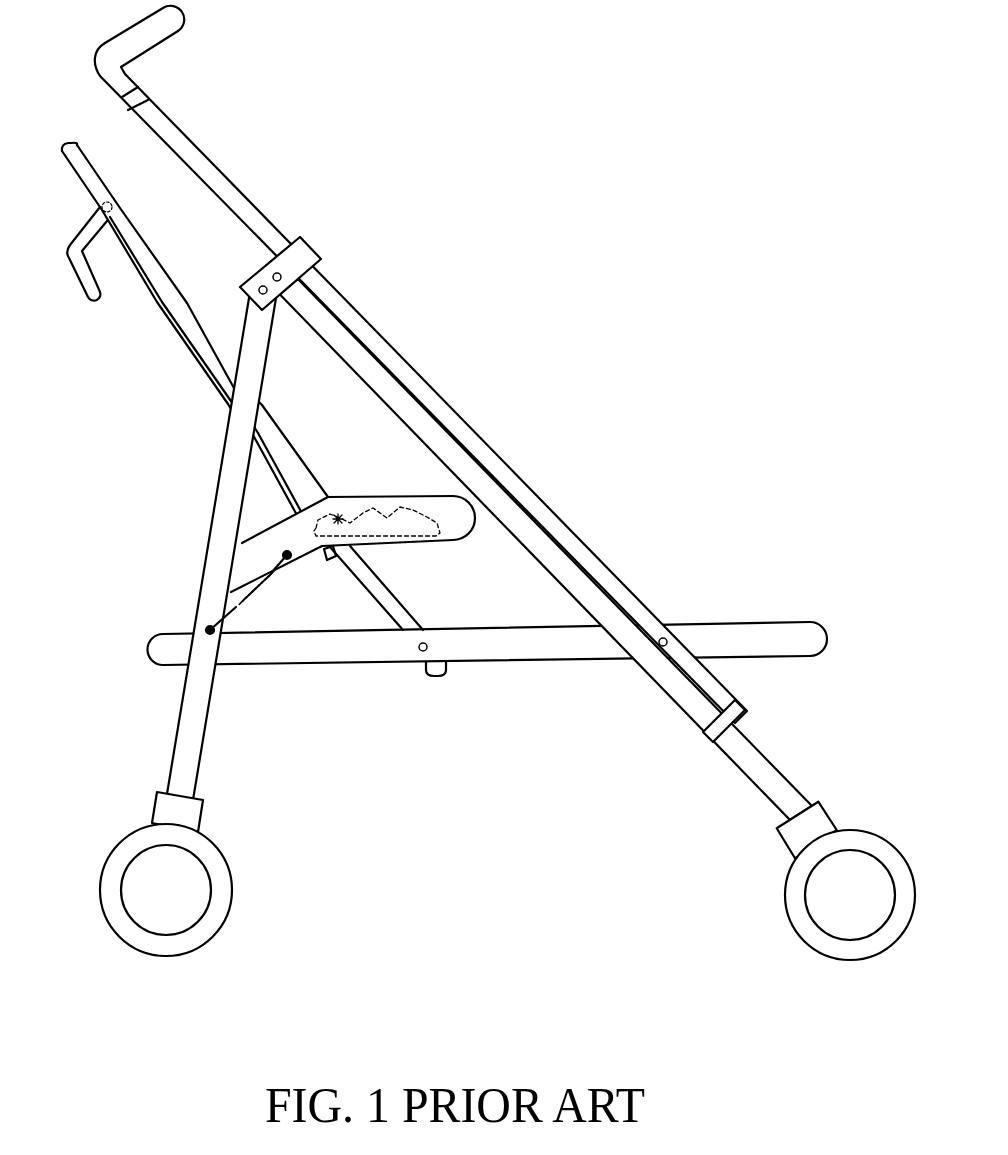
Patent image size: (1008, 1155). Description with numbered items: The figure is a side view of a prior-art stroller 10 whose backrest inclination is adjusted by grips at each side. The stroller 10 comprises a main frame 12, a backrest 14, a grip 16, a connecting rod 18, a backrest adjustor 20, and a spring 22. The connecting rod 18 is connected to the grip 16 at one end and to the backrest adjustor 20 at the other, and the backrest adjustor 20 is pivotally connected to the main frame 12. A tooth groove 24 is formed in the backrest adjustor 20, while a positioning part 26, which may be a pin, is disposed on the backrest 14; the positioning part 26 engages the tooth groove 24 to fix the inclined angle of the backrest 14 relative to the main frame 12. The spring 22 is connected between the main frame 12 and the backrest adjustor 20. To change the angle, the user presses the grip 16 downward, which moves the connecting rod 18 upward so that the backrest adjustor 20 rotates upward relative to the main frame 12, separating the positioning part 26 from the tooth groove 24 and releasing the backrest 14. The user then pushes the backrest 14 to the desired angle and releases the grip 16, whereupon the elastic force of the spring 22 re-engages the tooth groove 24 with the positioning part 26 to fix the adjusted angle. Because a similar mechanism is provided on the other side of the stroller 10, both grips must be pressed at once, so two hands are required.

The stroller 10 is at (471, 483).
The main frame 12 is at (237, 507).
The backrest 14 is at (213, 343).
The grip 16 is at (82, 240).
The connecting rod 18 is at (157, 302).
The backrest adjustor 20 is at (364, 506).
The spring 22 is at (250, 612).
The tooth groove 24 is at (396, 498).
The positioning part 26 is at (340, 516).